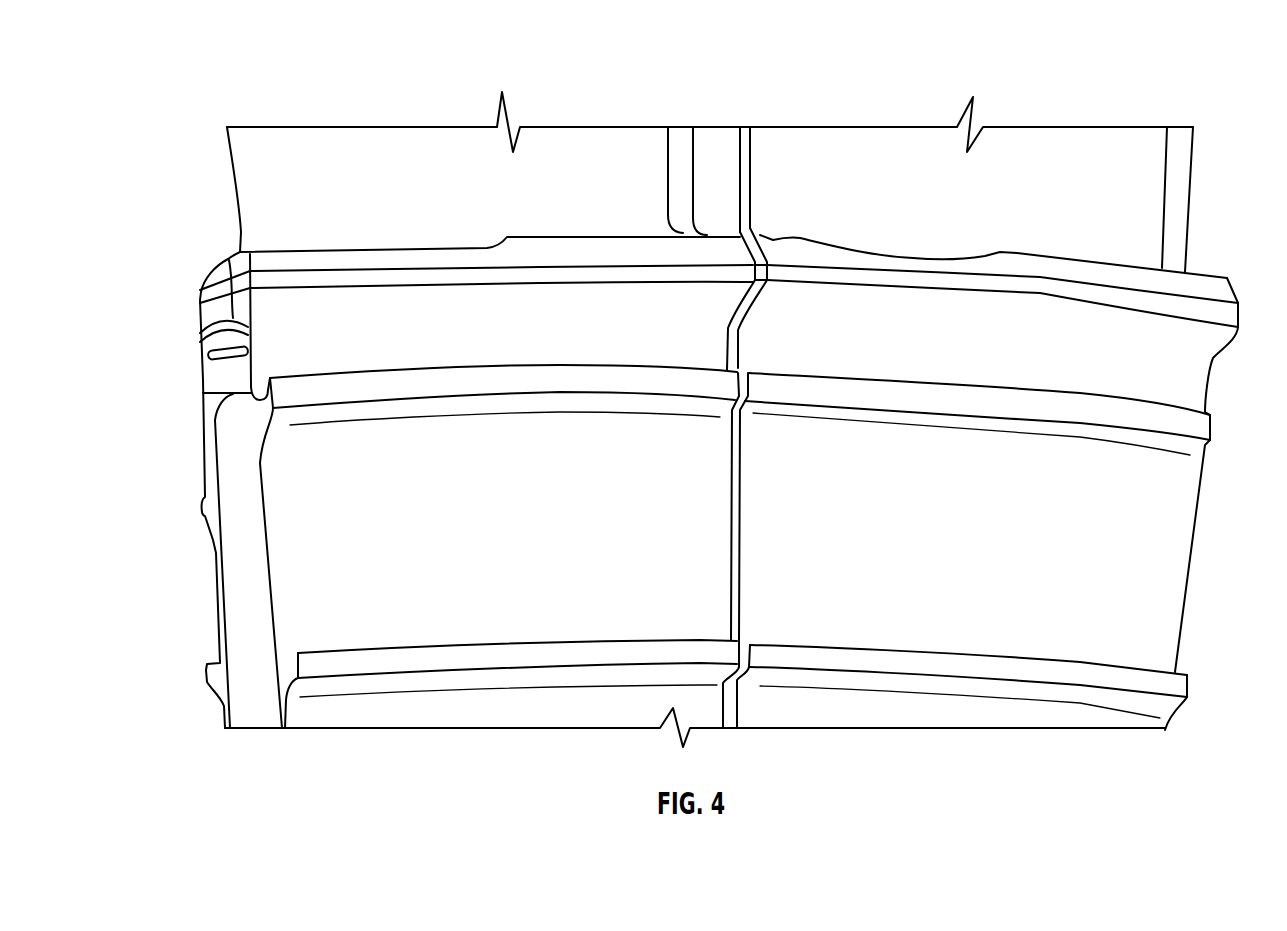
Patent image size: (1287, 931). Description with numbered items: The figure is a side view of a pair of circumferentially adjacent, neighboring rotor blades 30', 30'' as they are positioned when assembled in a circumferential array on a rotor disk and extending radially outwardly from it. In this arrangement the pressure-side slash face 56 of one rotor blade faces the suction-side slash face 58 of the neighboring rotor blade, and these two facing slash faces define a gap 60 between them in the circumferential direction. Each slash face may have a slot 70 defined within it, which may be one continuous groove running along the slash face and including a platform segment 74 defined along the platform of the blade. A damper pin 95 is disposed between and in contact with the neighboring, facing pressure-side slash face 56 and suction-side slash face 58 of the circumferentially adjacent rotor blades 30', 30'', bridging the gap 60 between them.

The rotor blade 30' is at (439, 155).
The neighboring rotor blade 30'' is at (1202, 238).
The pressure-side slash face 56 is at (210, 297).
The suction-side slash face 58 is at (640, 240).
The gap 60 is at (747, 576).
The slot 70 is at (201, 316).
The platform segment 74 is at (217, 312).
The damper pin 95 is at (208, 352).